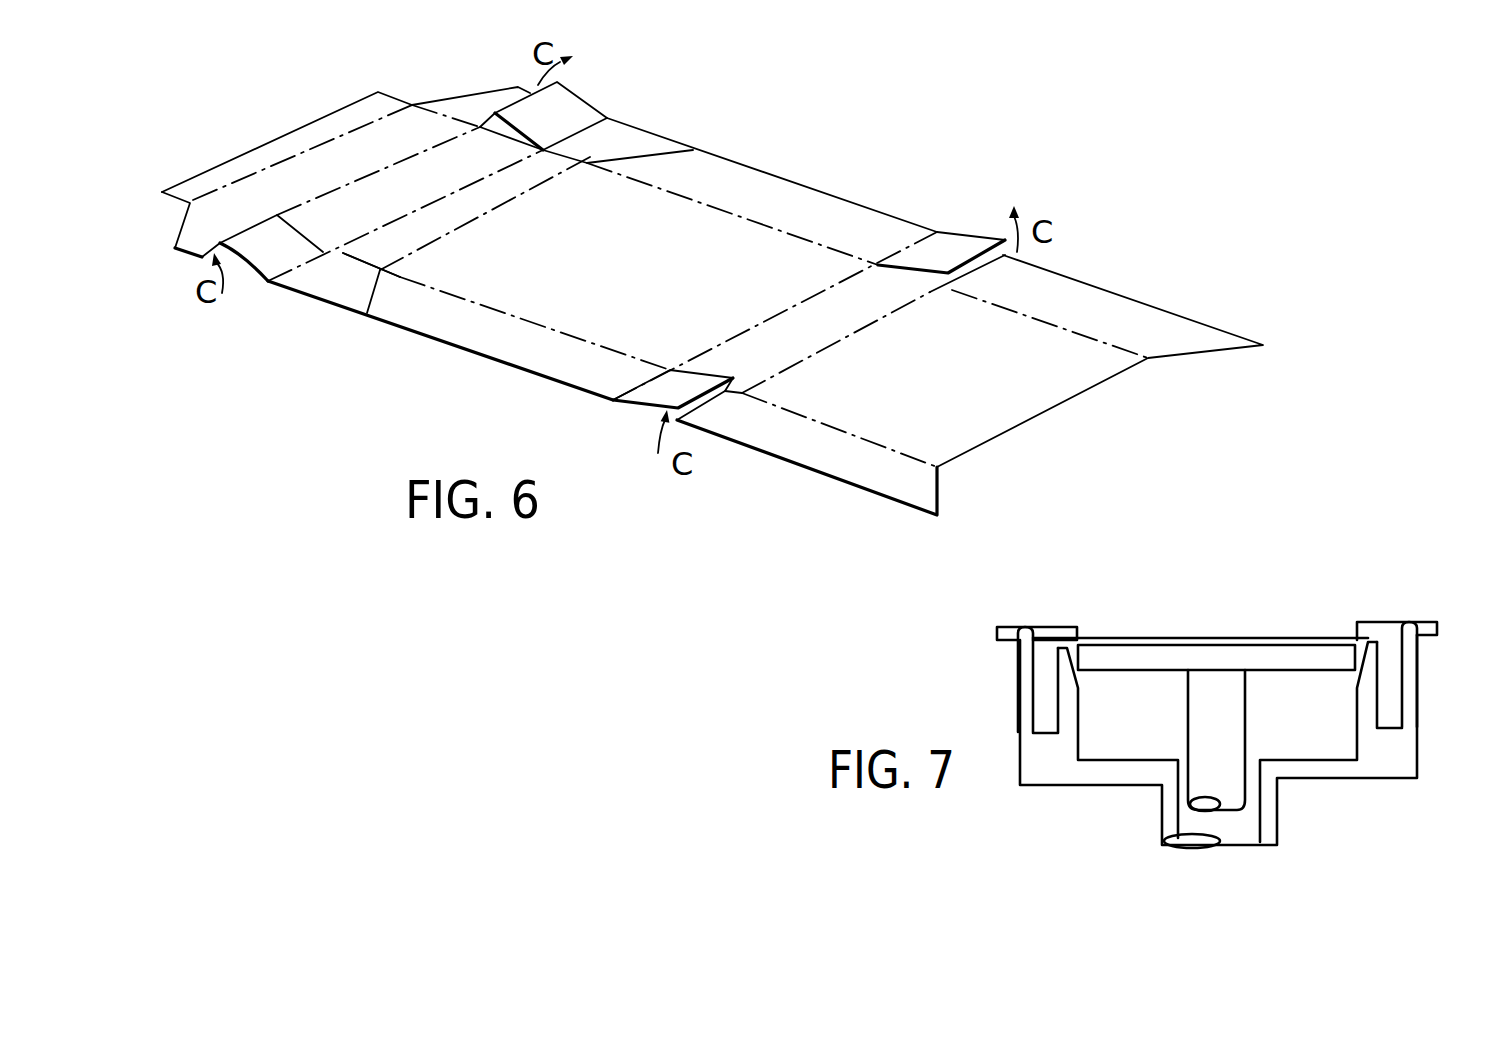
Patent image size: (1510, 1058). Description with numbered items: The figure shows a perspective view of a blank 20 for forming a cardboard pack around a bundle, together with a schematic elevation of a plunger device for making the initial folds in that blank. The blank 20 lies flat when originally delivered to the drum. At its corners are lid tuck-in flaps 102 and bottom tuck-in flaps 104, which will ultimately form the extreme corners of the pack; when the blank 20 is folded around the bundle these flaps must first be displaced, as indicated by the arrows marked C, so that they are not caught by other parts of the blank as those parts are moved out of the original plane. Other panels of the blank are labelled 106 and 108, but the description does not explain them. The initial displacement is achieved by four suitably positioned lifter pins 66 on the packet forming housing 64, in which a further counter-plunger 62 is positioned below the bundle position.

In FIG. 6, the blank 20 is at (436, 372).
In FIG. 6, the lid tuck-in flaps 102 is at (572, 103).
In FIG. 6, the bottom tuck-in flaps 104 is at (972, 240).
In FIG. 6, the end tab 106 is at (640, 138).
In FIG. 6, the side wall 108 is at (797, 190).
In FIG. 7, the counter-plunger 62 is at (1311, 654).
In FIG. 7, the packet forming housing 64 is at (1368, 781).
In FIG. 7, the lifter pins 66 is at (1016, 667).